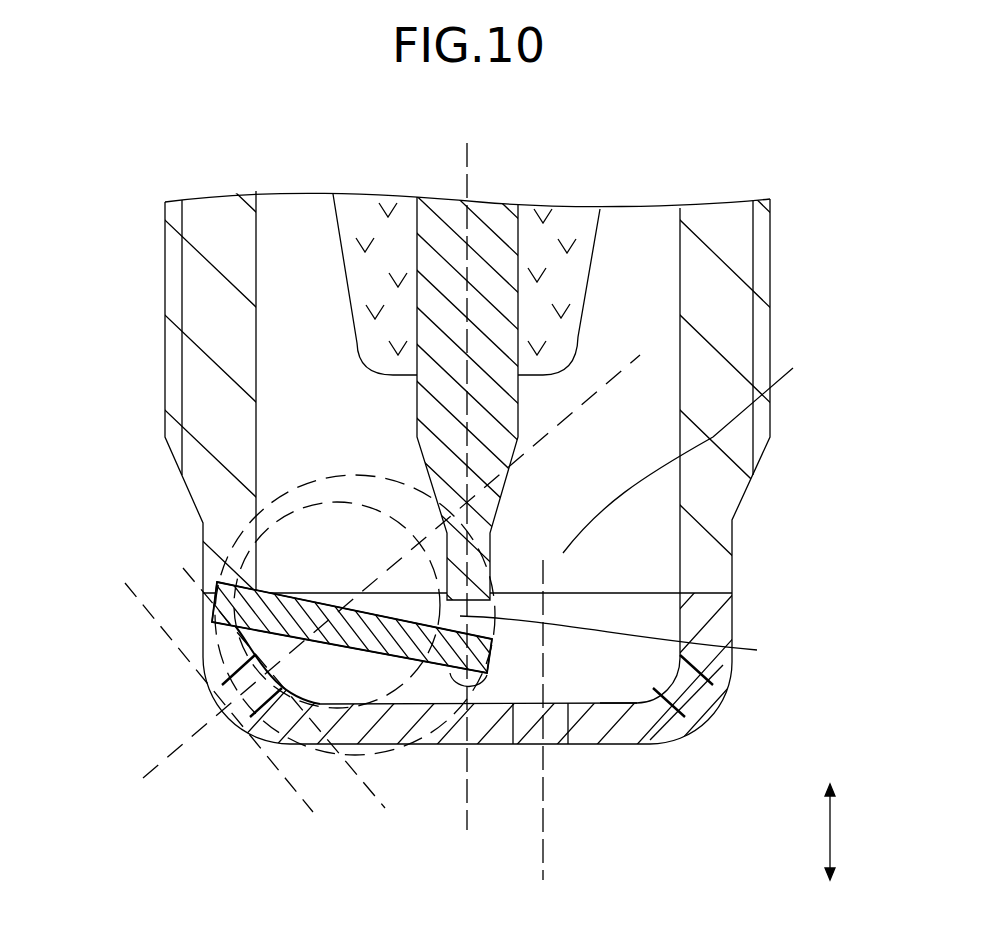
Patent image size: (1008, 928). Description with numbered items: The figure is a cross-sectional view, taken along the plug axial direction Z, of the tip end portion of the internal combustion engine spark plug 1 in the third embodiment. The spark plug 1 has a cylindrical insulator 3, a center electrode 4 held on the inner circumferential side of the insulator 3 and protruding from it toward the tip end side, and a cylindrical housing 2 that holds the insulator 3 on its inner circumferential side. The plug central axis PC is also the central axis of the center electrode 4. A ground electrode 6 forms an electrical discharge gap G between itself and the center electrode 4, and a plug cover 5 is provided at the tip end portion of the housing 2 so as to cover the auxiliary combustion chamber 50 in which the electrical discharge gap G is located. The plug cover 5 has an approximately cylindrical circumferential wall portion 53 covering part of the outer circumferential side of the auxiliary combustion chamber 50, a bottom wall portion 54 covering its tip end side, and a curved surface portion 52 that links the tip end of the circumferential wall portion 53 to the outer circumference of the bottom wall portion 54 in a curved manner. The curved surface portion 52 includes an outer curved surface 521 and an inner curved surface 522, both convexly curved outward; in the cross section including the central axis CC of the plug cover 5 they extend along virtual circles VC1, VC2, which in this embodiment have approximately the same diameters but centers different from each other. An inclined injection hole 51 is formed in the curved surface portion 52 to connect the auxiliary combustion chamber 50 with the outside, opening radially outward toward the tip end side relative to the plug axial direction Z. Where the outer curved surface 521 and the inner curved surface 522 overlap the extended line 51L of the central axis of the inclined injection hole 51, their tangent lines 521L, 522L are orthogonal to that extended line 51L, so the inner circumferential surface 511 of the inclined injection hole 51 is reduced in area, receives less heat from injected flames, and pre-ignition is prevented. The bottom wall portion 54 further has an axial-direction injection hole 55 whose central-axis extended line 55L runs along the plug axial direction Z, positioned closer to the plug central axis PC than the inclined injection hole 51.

The spark plug 1 is at (148, 247).
The housing 2 is at (708, 245).
The insulator 3 is at (550, 242).
The center electrode 4 is at (448, 222).
The plug cover 5 is at (713, 632).
The ground electrode 6 is at (413, 650).
The auxiliary combustion chamber 50 is at (697, 451).
The inclined injection hole 51 is at (688, 693).
The inner circumferential surface 511 is at (228, 680).
The curved surface portion 52 is at (713, 672).
The outer curved surface 521 is at (685, 730).
The inner curved surface 522 is at (640, 703).
The circumferential wall portion 53 is at (713, 613).
The bottom wall portion 54 is at (588, 728).
The axial-direction injection hole 55 is at (530, 727).
The electrical discharge gap G is at (619, 642).
The plug central axis PC is at (464, 306).
The central axis of the plug cover CC is at (467, 680).
The virtual circle VC1 is at (240, 540).
The virtual circle VC2 is at (290, 490).
The extended line of the central axis of the inclined injection hole 51L is at (365, 577).
The tangent line of the outer curved surface 521L is at (192, 683).
The tangent line of the inner curved surface 522L is at (306, 700).
The extended line of the central axis of the axial-direction injection hole 55L is at (543, 735).
The plug axial direction Z is at (843, 832).